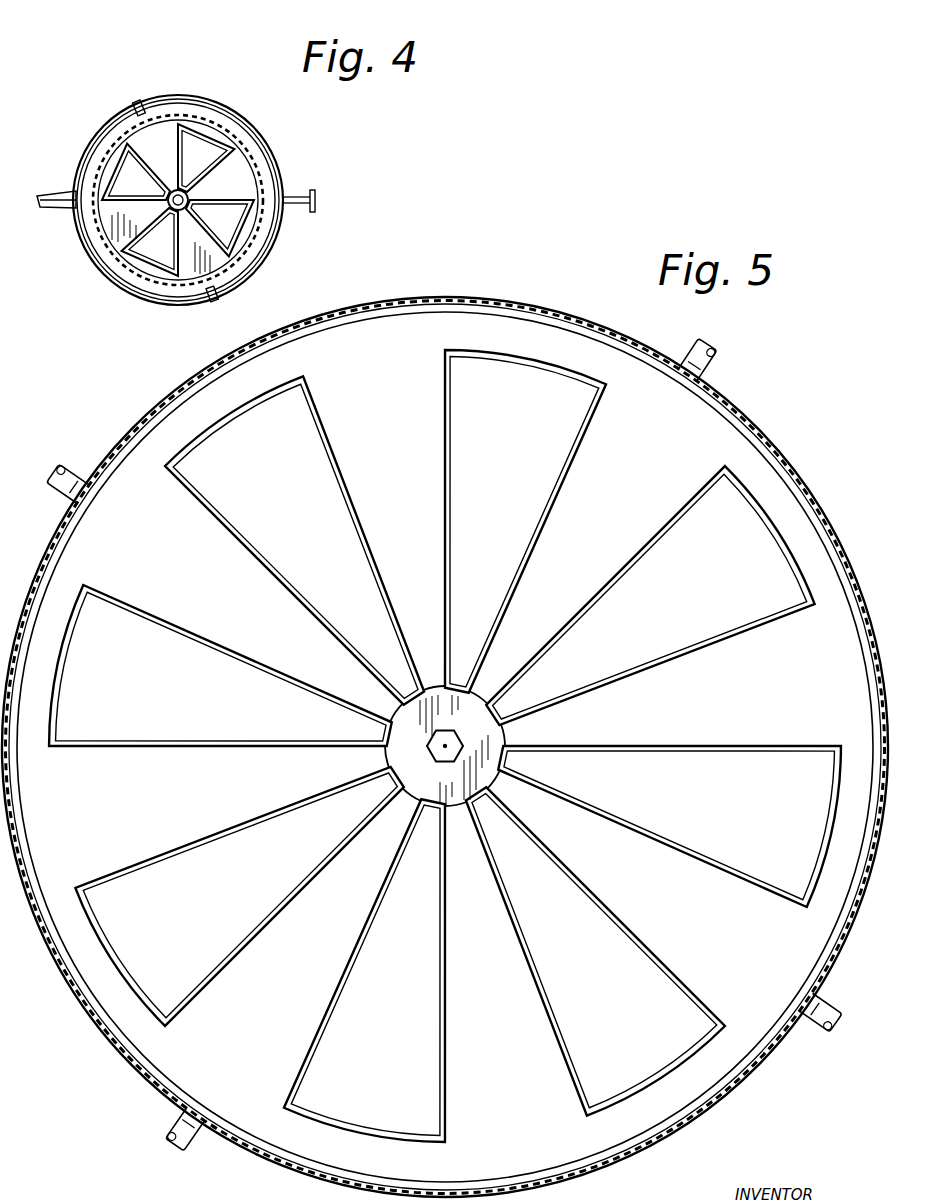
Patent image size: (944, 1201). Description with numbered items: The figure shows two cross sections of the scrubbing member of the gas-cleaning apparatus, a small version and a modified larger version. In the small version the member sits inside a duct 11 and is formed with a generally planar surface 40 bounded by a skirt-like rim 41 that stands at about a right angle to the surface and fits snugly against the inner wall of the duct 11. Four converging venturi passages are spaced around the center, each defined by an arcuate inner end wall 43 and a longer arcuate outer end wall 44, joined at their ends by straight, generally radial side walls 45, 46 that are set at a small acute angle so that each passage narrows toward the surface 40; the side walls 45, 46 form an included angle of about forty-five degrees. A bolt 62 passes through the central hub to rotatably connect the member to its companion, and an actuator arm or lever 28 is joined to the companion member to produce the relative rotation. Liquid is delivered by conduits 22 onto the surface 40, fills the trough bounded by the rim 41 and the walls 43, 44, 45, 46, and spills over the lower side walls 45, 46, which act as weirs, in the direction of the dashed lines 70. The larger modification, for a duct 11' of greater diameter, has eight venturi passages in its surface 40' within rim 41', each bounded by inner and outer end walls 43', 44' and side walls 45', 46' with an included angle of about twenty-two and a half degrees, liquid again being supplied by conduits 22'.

In FIG. 4, the duct 11 is at (205, 200).
In FIG. 4, the conduits 22 is at (167, 190).
In FIG. 4, the actuator arm or lever 28 is at (50, 193).
In FIG. 4, the planar surface 40 is at (187, 168).
In FIG. 4, the rim 41 is at (178, 176).
In FIG. 4, the inner end wall 43 is at (151, 190).
In FIG. 4, the outer end wall 44 is at (108, 157).
In FIG. 4, the side wall 45 is at (161, 193).
In FIG. 4, the side wall 46 is at (163, 197).
In FIG. 4, the bolt 62 is at (192, 197).
In FIG. 5, the bolt 62 is at (430, 750).
In FIG. 4, the dashed lines 70 is at (277, 230).
In FIG. 5, the duct 11' is at (445, 737).
In FIG. 5, the conduits 22' is at (435, 744).
In FIG. 5, the planar surface 40' is at (445, 721).
In FIG. 5, the rim 41' is at (445, 747).
In FIG. 5, the inner end wall 43' is at (444, 746).
In FIG. 5, the outer end wall 44' is at (423, 713).
In FIG. 5, the side wall 45' is at (513, 774).
In FIG. 5, the side wall 46' is at (525, 793).